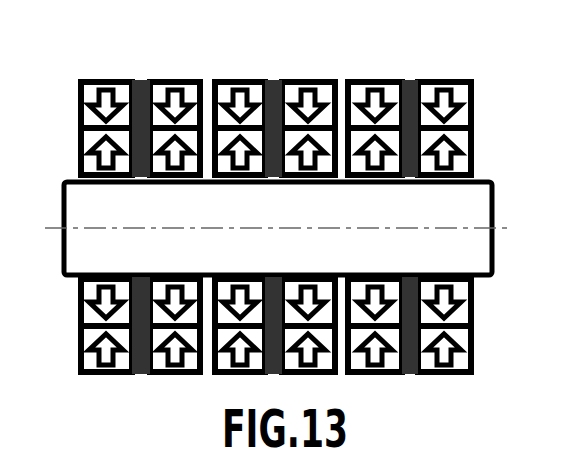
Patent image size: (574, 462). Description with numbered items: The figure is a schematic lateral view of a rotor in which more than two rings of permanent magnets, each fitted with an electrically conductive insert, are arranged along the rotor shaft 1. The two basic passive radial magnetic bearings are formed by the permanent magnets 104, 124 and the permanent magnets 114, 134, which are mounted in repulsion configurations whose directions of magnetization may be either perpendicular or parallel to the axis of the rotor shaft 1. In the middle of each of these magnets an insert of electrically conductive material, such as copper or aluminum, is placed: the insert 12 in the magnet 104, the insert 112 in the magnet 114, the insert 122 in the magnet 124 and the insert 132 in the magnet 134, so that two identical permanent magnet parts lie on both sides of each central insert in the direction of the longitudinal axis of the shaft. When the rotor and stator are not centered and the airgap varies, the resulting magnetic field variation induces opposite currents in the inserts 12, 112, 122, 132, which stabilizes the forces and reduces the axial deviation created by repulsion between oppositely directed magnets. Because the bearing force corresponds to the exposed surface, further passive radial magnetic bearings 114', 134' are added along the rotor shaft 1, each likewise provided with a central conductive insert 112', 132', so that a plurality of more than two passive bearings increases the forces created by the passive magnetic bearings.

The rotor shaft 1 is at (486, 183).
The insert of electrically conductive material 12 is at (411, 180).
The permanent magnet 104 is at (476, 140).
The insert of electrically conductive material 112 is at (140, 191).
The insert of electrically conductive material 112' is at (273, 191).
The permanent magnet 114 is at (78, 151).
The further passive radial magnetic bearing 114' is at (322, 173).
The insert of electrically conductive material 122 is at (410, 82).
The permanent magnet 124 is at (476, 95).
The insert of electrically conductive material 132 is at (141, 107).
The insert of electrically conductive material 132' is at (275, 107).
The permanent magnet 134 is at (78, 105).
The further passive radial magnetic bearing 134' is at (318, 83).